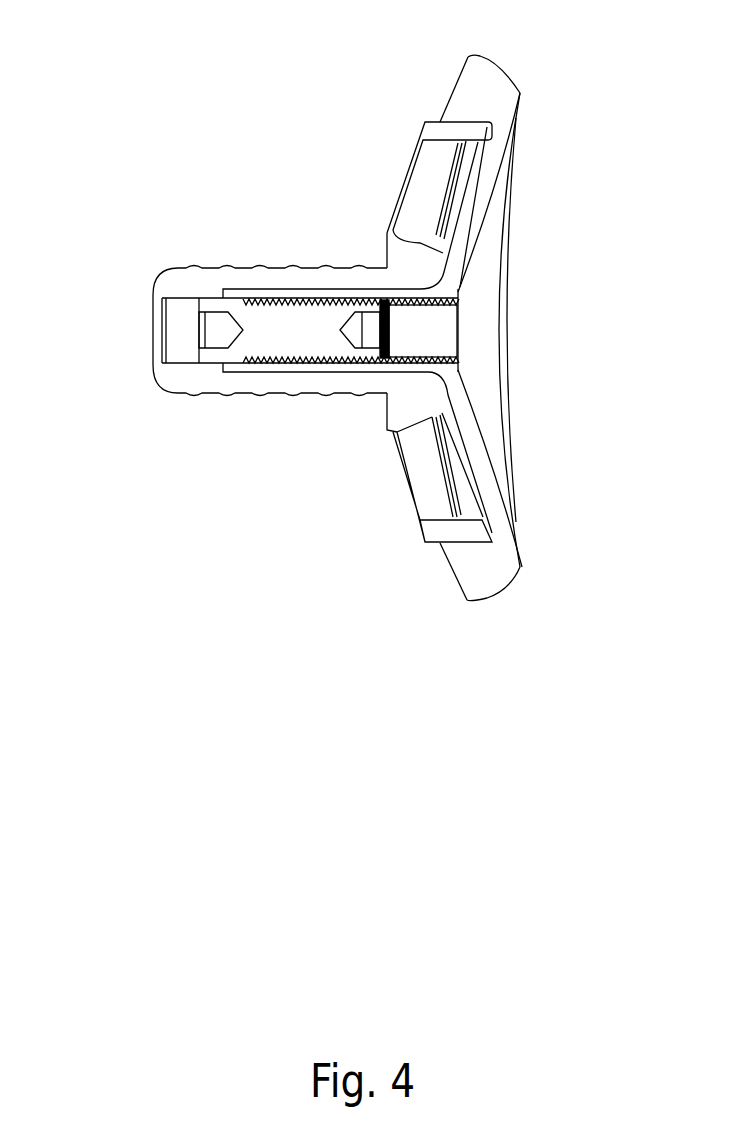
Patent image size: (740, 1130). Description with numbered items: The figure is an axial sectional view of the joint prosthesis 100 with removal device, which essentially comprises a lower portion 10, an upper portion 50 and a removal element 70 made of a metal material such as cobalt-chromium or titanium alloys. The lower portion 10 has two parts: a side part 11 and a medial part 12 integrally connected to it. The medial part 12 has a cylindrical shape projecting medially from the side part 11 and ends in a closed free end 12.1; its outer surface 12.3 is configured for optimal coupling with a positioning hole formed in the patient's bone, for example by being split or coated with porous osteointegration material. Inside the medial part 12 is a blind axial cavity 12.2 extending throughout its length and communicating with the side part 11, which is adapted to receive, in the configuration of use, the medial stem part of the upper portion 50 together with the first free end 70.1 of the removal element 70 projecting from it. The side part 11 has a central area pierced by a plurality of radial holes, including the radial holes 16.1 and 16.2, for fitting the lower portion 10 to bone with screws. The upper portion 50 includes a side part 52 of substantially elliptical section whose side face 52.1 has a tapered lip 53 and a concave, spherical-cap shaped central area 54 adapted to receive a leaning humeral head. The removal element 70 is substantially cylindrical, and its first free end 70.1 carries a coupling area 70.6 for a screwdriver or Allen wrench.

The lower portion 10 is at (303, 246).
The side part 11 is at (384, 418).
The medial part 12 is at (227, 406).
The closed free end 12.1 is at (150, 320).
The axial cavity 12.2 is at (454, 316).
The outer surface 12.3 is at (292, 395).
The radial hole 16.1 is at (420, 478).
The radial hole 16.2 is at (413, 183).
The upper portion 50 is at (524, 268).
The side part 52 is at (438, 76).
The side face 52.1 is at (529, 530).
The tapered lip 53 is at (505, 72).
The central area 54 is at (489, 426).
The removal element 70 is at (265, 320).
The first free end 70.1 is at (201, 300).
The coupling area 70.6 is at (392, 333).
The joint prosthesis 100 is at (313, 643).